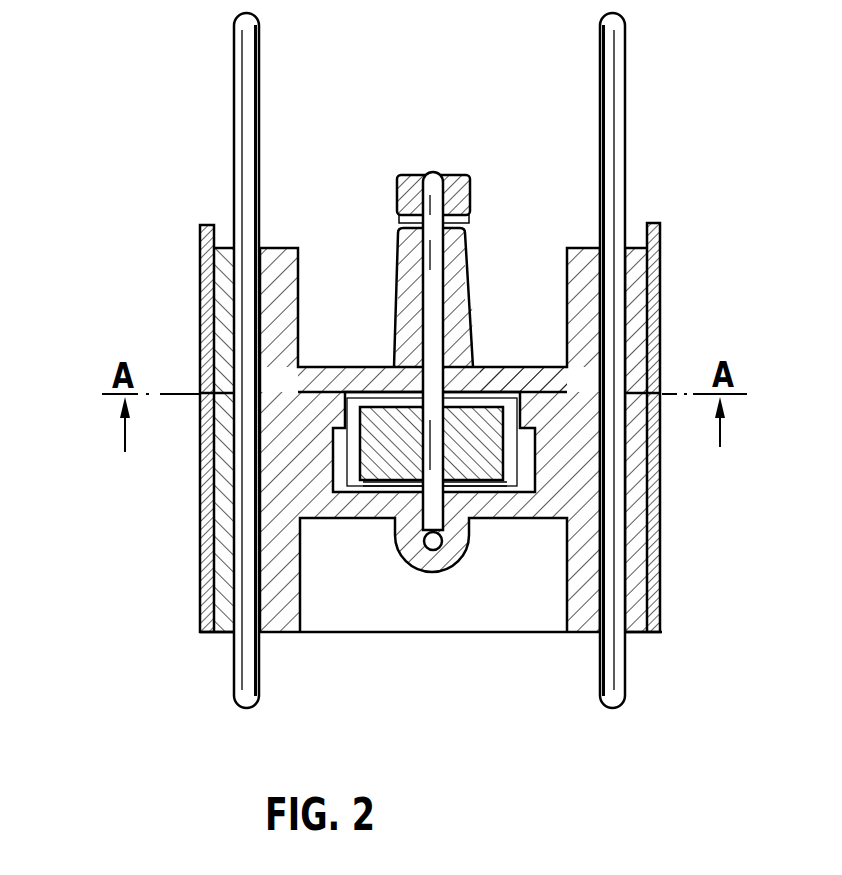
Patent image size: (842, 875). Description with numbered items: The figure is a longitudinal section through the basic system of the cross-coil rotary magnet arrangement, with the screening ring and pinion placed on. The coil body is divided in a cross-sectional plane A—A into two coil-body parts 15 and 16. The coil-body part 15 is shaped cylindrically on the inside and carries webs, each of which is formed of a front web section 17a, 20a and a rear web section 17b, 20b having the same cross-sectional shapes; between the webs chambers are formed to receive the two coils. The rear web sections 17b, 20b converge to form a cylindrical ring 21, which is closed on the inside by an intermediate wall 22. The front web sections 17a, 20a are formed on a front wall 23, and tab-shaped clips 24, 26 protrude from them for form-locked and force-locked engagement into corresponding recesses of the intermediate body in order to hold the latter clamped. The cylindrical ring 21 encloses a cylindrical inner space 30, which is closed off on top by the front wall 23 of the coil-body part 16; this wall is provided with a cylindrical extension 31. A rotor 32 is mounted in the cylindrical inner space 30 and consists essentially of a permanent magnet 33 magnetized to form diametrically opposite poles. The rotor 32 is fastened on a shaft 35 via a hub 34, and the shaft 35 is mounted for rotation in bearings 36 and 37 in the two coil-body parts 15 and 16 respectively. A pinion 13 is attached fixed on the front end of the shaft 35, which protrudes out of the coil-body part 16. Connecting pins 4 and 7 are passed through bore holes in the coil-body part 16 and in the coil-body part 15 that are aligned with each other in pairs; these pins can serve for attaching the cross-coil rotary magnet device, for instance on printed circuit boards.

The connecting pin 4 is at (245, 95).
The connecting pin 7 is at (608, 104).
The pinion 13 is at (470, 193).
The coil-body part 15 is at (458, 632).
The coil-body part 16 is at (456, 372).
The front web section 17a is at (218, 290).
The rear web section 17b is at (228, 507).
The front web section 20a is at (637, 287).
The rear web section 20b is at (640, 507).
The cylindrical ring 21 is at (557, 488).
The intermediate wall 22 is at (484, 518).
The front wall 23 is at (335, 388).
The tab-shaped clip 24 is at (210, 232).
The tab-shaped clip 26 is at (655, 228).
The cylindrical inner space 30 is at (514, 482).
The cylindrical extension 31 is at (508, 387).
The rotor 32 is at (370, 470).
The permanent magnet 33 is at (370, 487).
The hub 34 is at (400, 484).
The shaft 35 is at (397, 222).
The bearing 36 is at (433, 551).
The bearing 37 is at (468, 242).